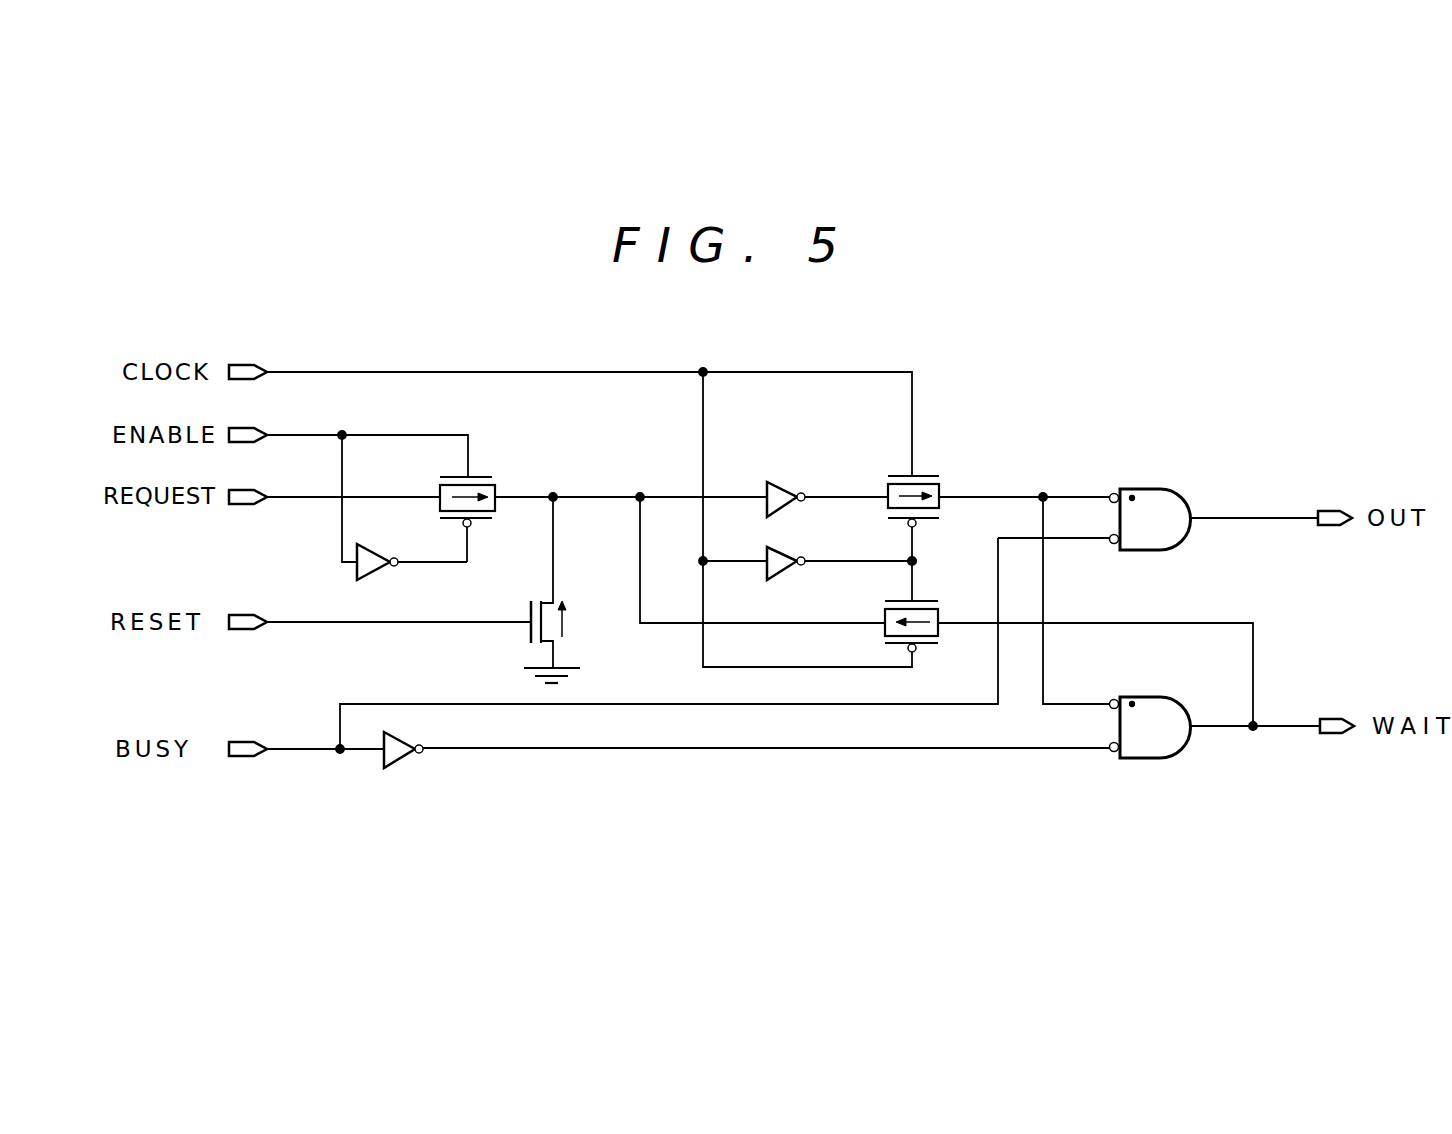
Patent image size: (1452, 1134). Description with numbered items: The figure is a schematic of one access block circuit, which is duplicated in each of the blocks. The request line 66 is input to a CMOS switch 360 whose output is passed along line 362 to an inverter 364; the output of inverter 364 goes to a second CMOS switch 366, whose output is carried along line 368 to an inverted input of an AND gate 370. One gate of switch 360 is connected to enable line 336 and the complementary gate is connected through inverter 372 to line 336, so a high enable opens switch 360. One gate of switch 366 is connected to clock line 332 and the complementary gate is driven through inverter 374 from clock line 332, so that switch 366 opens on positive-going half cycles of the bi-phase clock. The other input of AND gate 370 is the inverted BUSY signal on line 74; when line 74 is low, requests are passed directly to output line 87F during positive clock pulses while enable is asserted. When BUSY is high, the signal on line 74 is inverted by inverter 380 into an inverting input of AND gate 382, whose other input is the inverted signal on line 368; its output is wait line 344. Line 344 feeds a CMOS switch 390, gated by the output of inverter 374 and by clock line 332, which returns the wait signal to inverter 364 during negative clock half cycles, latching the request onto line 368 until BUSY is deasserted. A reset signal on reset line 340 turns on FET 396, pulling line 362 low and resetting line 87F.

The clock line 332 is at (325, 368).
The enable line 336 is at (322, 432).
The request line 66 is at (278, 495).
The reset line 340 is at (340, 625).
The BUSY line 74 is at (297, 757).
The CMOS switch 360 is at (497, 492).
The line 362 is at (600, 493).
The inverter 364 is at (785, 482).
The second CMOS switch 366 is at (940, 490).
The line 368 is at (1050, 492).
The AND gate 370 is at (1180, 490).
The inverter 372 is at (385, 577).
The inverter 374 is at (785, 547).
The inverter 380 is at (401, 768).
The AND gate 382 is at (1165, 760).
The CMOS switch 390 is at (938, 612).
The FET 396 is at (568, 630).
The output line 87F is at (1283, 515).
The wait line 344 is at (1288, 735).